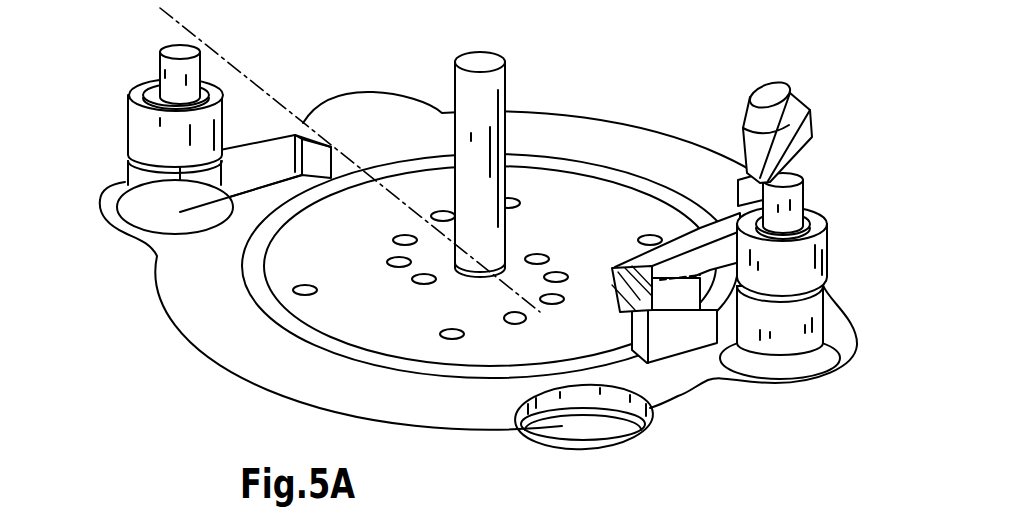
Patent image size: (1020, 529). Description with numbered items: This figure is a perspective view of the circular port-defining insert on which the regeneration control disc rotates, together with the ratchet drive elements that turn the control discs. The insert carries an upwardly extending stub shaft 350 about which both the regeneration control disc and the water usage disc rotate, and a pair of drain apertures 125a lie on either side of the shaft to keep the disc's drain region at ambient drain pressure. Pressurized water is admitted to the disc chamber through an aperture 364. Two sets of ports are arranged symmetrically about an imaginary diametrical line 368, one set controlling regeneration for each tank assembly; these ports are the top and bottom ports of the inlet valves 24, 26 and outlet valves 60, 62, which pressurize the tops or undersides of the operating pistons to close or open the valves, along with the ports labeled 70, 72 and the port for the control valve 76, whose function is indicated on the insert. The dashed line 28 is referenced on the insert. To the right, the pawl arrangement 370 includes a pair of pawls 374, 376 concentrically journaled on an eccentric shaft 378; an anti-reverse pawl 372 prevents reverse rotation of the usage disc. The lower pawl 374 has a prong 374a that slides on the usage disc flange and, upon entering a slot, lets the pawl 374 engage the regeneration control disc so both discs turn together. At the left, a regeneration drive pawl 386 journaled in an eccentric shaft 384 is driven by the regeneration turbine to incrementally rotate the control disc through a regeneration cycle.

The inlet valve 24 is at (517, 324).
The inlet valve 26 is at (443, 210).
The annular ring 28 is at (471, 310).
The outlet valve 60 is at (441, 333).
The outlet valve 62 is at (514, 203).
The apertures 70 is at (392, 259).
The aperture 72 is at (568, 278).
The control valve 76 is at (293, 290).
The drain apertures 125a is at (491, 277).
The stub shaft 350 is at (493, 58).
The aperture 364 is at (517, 422).
The imaginary diametrical line 368 is at (220, 50).
The pawl arrangement 370 is at (752, 209).
The anti-reverse pawl 372 is at (790, 97).
The lower pawl 374 is at (751, 249).
The prong 374a is at (613, 266).
The pawl 376 is at (828, 244).
The eccentric shaft 378 is at (806, 194).
The eccentric shaft 384 is at (162, 50).
The regeneration drive pawl 386 is at (130, 100).